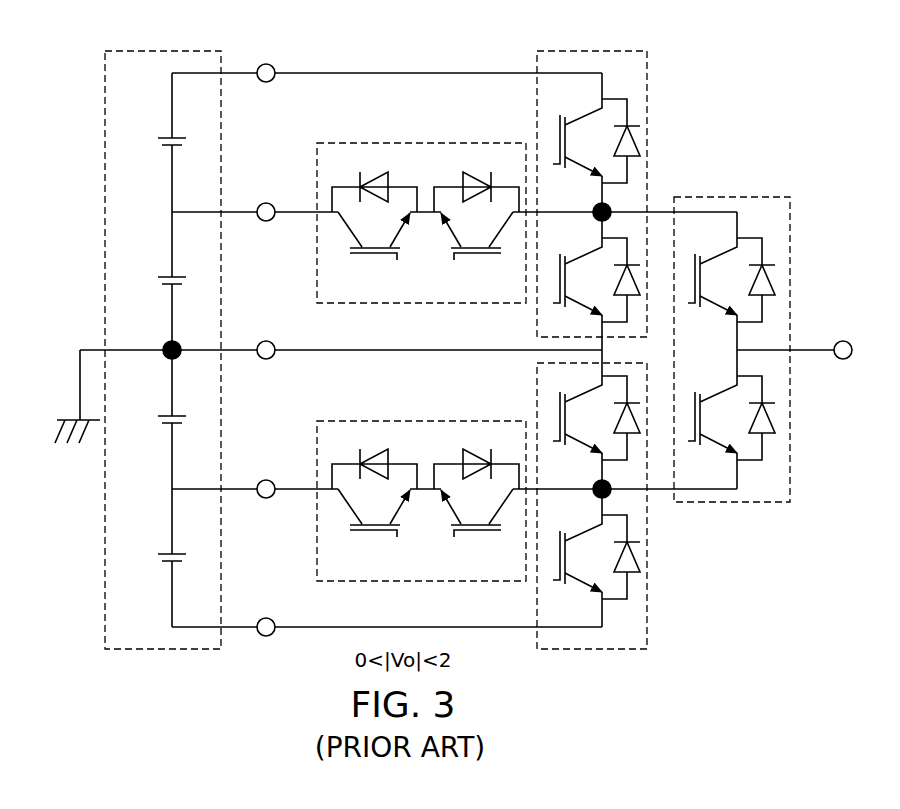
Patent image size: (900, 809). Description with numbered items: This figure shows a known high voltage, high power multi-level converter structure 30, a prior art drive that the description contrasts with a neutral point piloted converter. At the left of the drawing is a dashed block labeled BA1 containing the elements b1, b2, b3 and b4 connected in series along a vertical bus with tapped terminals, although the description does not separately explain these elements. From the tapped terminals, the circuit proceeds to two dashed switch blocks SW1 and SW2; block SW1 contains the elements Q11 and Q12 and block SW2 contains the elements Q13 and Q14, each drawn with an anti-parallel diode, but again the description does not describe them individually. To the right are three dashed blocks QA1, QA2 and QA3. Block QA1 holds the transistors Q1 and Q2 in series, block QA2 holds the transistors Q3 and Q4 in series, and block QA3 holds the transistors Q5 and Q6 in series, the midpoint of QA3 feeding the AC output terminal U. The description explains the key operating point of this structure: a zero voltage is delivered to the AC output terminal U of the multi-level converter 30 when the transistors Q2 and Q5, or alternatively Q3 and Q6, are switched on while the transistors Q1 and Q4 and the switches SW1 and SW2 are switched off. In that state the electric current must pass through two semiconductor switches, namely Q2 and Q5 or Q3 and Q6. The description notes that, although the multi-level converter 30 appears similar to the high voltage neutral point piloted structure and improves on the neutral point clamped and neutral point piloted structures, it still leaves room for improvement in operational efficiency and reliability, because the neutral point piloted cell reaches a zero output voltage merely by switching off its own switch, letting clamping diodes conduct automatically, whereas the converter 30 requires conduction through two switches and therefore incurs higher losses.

The multi-level converter 30 is at (458, 340).
The battery assembly BA1 is at (163, 336).
The battery cell b1 is at (155, 143).
The battery cell b2 is at (155, 281).
The battery cell b3 is at (155, 421).
The battery cell b4 is at (155, 560).
The switch SW1 is at (421, 208).
The switch SW2 is at (421, 485).
The IGBT switching element Q11 is at (374, 232).
The IGBT switching element Q12 is at (476, 232).
The IGBT switching element Q13 is at (374, 509).
The IGBT switching element Q14 is at (476, 509).
The switching arm QA1 is at (592, 182).
The switching arm QA2 is at (592, 513).
The switching arm QA3 is at (732, 363).
The transistor Q1 is at (593, 136).
The transistor Q2 is at (593, 275).
The transistor Q3 is at (593, 413).
The transistor Q4 is at (593, 552).
The transistor Q5 is at (728, 275).
The transistor Q6 is at (728, 413).
The AC output terminal U is at (854, 351).